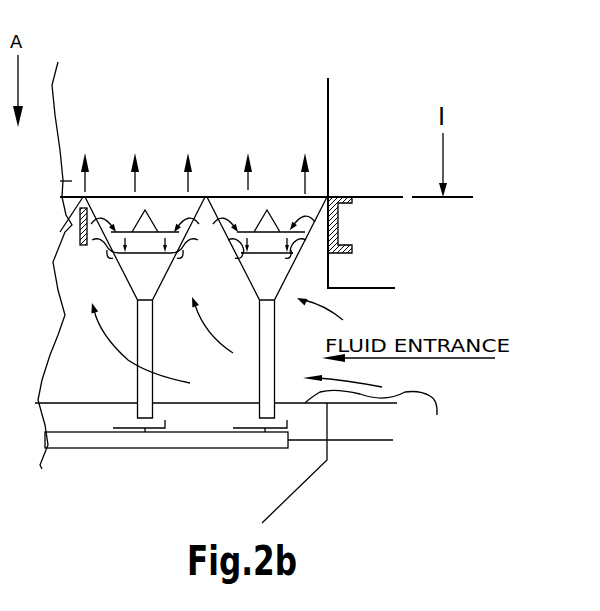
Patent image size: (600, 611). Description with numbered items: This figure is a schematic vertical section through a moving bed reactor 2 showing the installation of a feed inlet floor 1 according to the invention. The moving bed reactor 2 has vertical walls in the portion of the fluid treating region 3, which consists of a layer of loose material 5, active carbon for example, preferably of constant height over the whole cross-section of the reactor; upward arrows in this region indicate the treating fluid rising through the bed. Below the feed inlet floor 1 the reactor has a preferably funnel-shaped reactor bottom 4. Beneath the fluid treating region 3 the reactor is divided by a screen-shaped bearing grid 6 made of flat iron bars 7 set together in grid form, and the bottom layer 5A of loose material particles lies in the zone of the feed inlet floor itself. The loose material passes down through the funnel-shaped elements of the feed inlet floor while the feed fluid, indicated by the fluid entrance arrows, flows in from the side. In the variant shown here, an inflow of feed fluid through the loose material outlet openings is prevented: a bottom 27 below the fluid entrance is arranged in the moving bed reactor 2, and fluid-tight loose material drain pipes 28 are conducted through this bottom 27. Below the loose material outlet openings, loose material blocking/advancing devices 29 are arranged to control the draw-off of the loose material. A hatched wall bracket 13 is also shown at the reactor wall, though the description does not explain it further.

The feed inlet floor 1 is at (336, 162).
The moving bed reactor 2 is at (328, 131).
The fluid treating region 3 is at (170, 151).
The reactor bottom 4 is at (290, 500).
The loose material 5 is at (72, 181).
The bottom layer of loose material particles 5A is at (52, 207).
The bearing grid 6 is at (2, 163).
The flat iron bars 7 is at (88, 236).
The flange bracket 13 is at (338, 228).
The bottom 27 is at (378, 415).
The loose material drain pipes 28 is at (258, 368).
The loose material blocking/advancing devices 29 is at (134, 464).